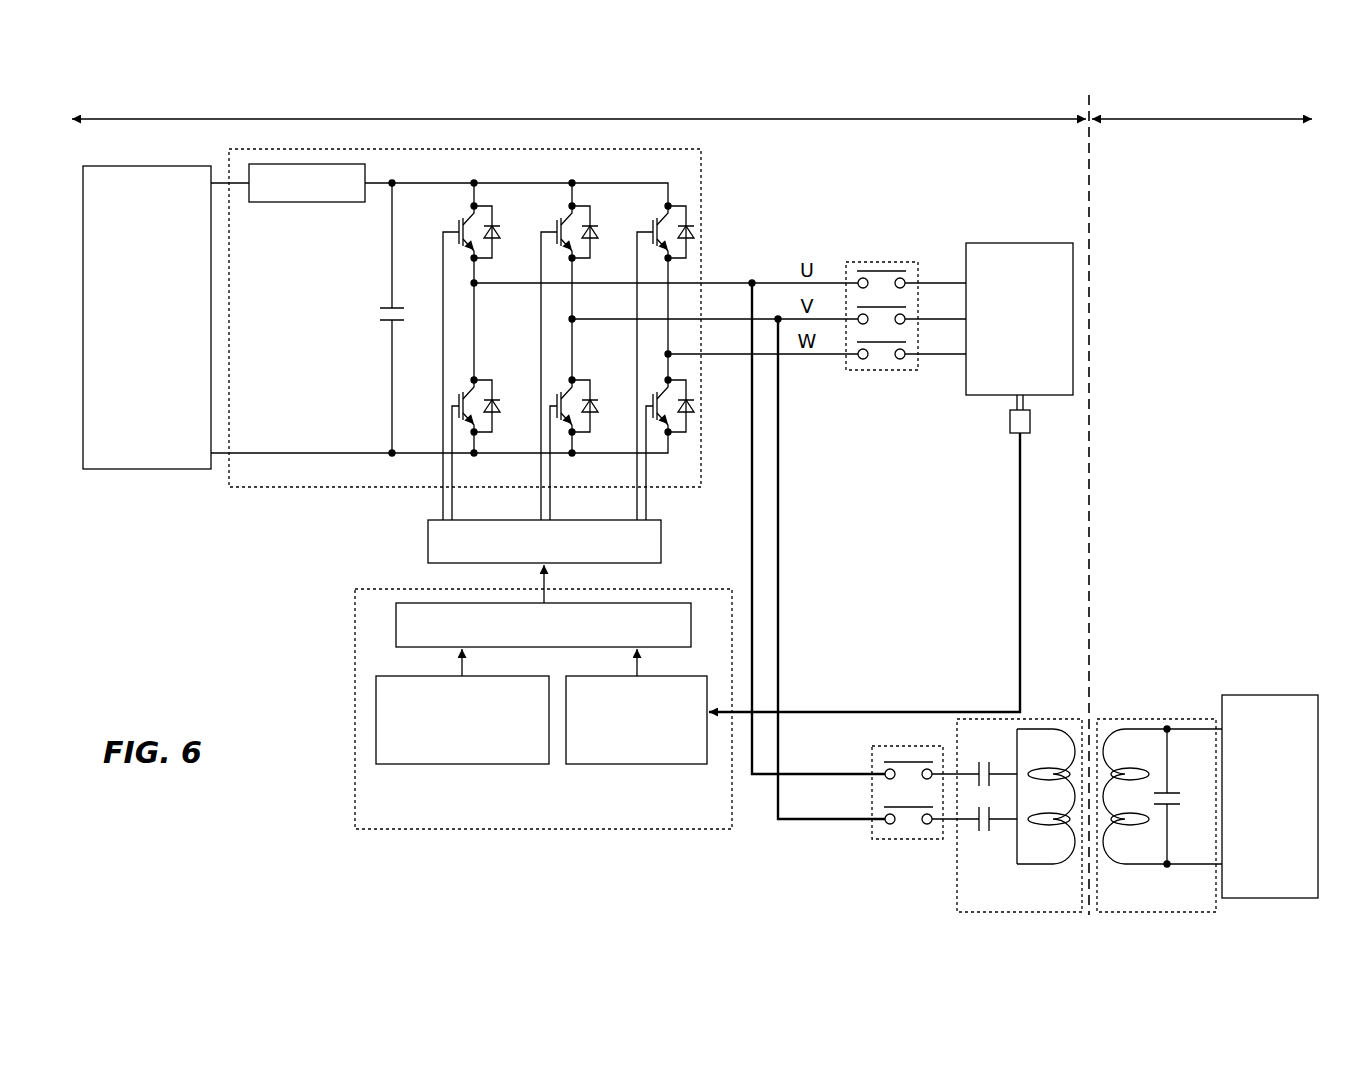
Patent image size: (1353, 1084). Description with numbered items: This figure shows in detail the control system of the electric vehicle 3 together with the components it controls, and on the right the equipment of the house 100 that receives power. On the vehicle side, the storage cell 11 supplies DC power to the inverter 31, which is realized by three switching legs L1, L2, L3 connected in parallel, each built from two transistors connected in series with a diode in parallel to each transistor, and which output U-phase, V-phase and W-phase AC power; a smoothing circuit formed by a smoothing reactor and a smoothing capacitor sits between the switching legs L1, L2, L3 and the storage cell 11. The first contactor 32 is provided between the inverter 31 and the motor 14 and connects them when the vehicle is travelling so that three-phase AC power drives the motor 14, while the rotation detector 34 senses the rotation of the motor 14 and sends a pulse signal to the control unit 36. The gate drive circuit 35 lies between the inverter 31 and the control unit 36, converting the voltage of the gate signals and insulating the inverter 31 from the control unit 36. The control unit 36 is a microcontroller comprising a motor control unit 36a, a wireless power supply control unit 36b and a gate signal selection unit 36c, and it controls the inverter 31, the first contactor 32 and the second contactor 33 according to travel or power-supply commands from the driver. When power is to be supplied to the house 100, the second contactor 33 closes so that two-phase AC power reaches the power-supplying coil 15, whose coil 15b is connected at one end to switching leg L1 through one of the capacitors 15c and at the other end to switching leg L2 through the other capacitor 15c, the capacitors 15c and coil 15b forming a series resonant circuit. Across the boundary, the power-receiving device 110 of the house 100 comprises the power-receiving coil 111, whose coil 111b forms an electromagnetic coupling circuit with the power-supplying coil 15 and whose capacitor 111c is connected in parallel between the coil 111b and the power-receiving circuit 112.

The electric vehicle 3 is at (579, 105).
The house 100 is at (1202, 105).
The storage cell 11 is at (152, 470).
The inverter 31 is at (483, 334).
The switching leg L1 is at (487, 375).
The switching leg L2 is at (585, 375).
The switching leg L3 is at (685, 369).
The first contactor 32 is at (882, 262).
The motor 14 is at (1022, 243).
The rotation detector 34 is at (1010, 421).
The gate drive circuit 35 is at (428, 544).
The control unit 36 is at (513, 697).
The motor control unit 36a is at (640, 764).
The wireless power supply control unit 36b is at (460, 764).
The gate signal selection unit 36c is at (396, 627).
The second contactor 33 is at (908, 840).
The power-supplying coil 15 is at (1007, 791).
The coil 15b is at (1040, 865).
The capacitors 15c is at (984, 842).
The power-receiving device 110 is at (1208, 642).
The power-receiving coil 111 is at (1160, 780).
The coil 111b is at (1138, 865).
The capacitor 111c is at (1173, 808).
The power-receiving circuit 112 is at (1268, 695).